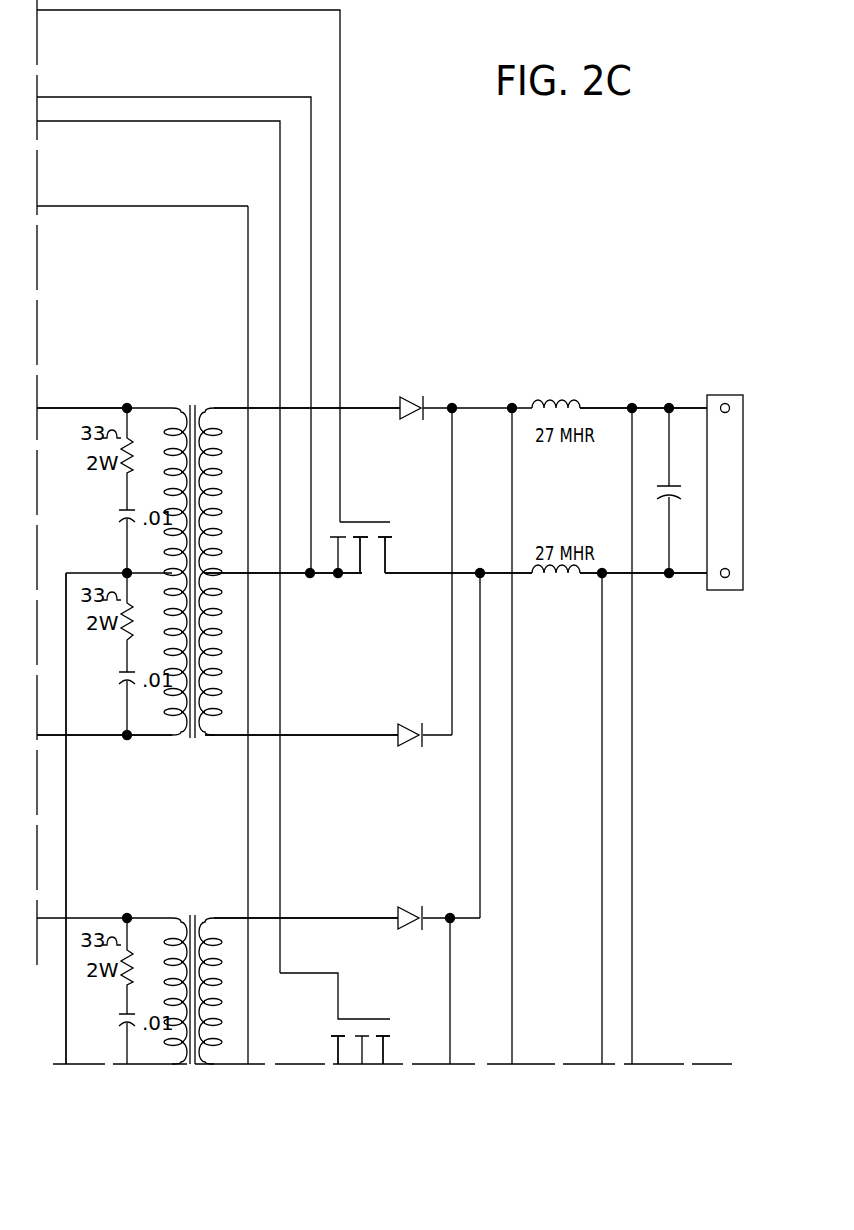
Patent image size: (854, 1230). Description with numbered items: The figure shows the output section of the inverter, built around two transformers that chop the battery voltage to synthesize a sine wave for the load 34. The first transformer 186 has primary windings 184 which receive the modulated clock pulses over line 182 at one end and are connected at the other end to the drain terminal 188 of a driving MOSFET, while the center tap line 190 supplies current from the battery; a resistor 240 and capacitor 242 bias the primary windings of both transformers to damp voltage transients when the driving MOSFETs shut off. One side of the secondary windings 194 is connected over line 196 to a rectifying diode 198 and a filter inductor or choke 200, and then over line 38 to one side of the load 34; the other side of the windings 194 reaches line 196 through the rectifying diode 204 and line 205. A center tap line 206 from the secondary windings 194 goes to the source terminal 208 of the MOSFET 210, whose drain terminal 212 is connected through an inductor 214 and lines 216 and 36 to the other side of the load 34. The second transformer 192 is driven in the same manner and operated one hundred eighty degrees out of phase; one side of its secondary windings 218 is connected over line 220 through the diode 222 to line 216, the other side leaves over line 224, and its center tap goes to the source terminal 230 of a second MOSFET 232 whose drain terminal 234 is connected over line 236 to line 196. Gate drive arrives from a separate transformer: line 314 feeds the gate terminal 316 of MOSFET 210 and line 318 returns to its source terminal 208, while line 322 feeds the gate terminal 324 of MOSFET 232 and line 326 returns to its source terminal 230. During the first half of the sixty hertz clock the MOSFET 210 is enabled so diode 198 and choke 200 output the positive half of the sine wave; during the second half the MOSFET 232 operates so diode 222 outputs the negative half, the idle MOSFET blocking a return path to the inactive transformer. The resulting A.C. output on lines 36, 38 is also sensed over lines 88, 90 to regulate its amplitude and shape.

The line 314 is at (341, 45).
The line 318 is at (181, 97).
The line 322 is at (188, 123).
The line 326 is at (163, 205).
The line 182 is at (108, 407).
The primary windings 184 is at (175, 406).
The transformer 186 is at (201, 401).
The secondary windings 194 is at (222, 648).
The resistor 240 is at (120, 474).
The capacitor 242 is at (120, 512).
The center tap line 190 is at (67, 684).
The drain terminal 188 is at (107, 737).
The line 196 is at (357, 406).
The rectifying diode 198 is at (412, 400).
The filter inductor or choke 200 is at (556, 404).
The line 38 is at (598, 406).
The load 34 is at (717, 394).
The gate terminal 316 is at (347, 521).
The MOSFET 210 is at (365, 515).
The drain terminal 212 is at (387, 551).
The source terminal 208 is at (362, 560).
The center tap line 206 is at (292, 580).
The line 216 is at (462, 572).
The inductor 214 is at (572, 585).
The line 36 is at (590, 580).
The line 205 is at (357, 734).
The rectifying diode 204 is at (412, 726).
The line 236 is at (512, 763).
The line 88 is at (602, 828).
The line 90 is at (632, 776).
The transformer 192 is at (189, 911).
The secondary windings 218 is at (213, 938).
The line 220 is at (362, 917).
The diode 222 is at (413, 910).
The line 224 is at (450, 985).
The gate terminal 324 is at (362, 1017).
The MOSFET 232 is at (375, 1011).
The source terminal 230 is at (360, 1052).
The drain terminal 234 is at (385, 1050).